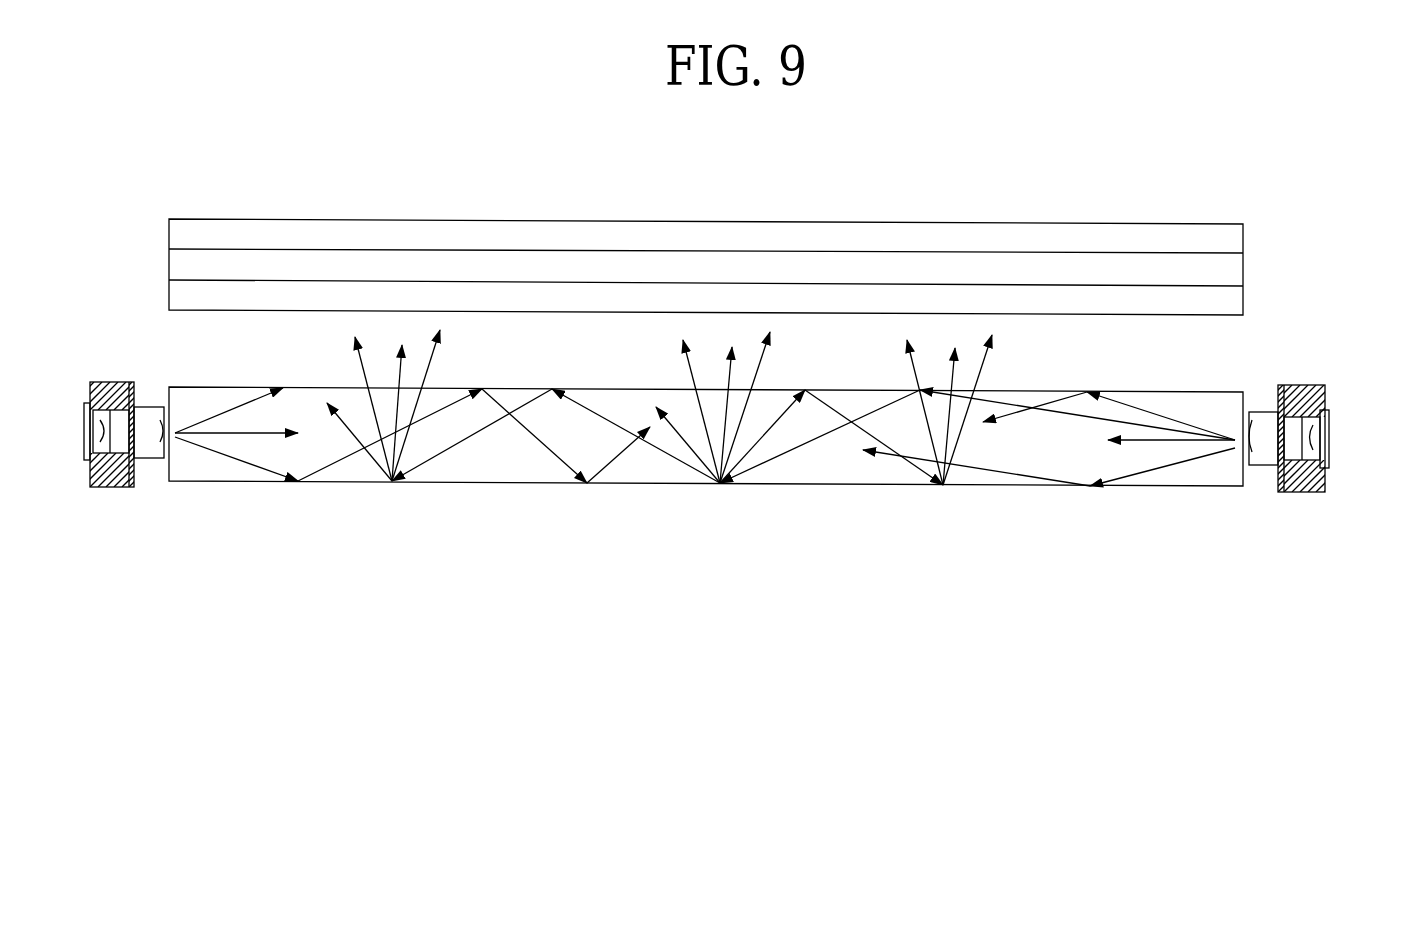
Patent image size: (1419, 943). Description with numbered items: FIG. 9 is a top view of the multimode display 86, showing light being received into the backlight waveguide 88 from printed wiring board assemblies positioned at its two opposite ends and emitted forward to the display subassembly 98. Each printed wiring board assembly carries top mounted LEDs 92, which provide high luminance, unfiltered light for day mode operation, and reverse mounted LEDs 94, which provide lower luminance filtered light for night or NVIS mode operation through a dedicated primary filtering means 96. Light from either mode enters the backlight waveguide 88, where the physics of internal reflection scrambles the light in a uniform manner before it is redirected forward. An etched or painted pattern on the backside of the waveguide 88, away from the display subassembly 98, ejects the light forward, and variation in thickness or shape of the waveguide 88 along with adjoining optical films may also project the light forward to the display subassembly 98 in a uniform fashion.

The multimode display 86 is at (325, 163).
The backlight waveguide 88 is at (439, 485).
The top mounted LEDs 92 is at (1260, 409).
The reverse mounted LEDs 94 is at (1336, 432).
The primary filtering means 96 is at (1281, 386).
The display subassembly 98 is at (1015, 232).